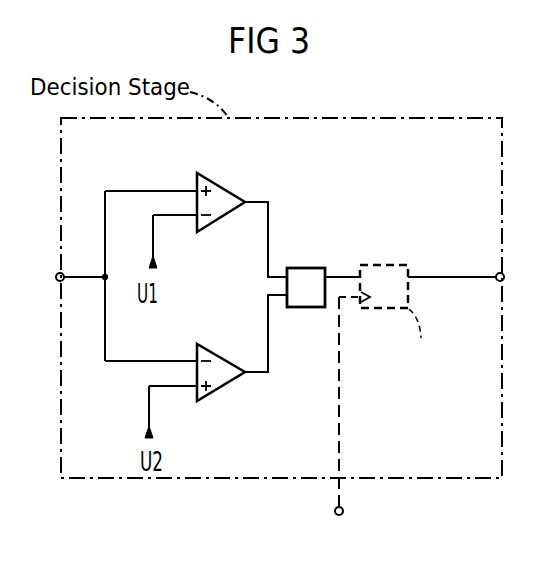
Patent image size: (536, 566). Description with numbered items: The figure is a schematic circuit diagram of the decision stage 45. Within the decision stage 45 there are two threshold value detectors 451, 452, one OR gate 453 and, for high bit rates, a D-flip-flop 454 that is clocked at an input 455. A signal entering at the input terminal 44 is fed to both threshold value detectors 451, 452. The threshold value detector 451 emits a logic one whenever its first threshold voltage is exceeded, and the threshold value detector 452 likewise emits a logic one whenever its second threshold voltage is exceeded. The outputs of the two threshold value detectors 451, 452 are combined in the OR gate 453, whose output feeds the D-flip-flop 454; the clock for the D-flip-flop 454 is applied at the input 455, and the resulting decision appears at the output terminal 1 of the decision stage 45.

The decision stage 45 is at (318, 130).
The input terminal 44 is at (61, 272).
The threshold value detector 451 is at (229, 196).
The threshold value detector 452 is at (240, 420).
The OR gate 453 is at (340, 238).
The D-flip-flop 454 is at (410, 300).
The input 455 is at (340, 426).
The output terminal 1 is at (497, 272).